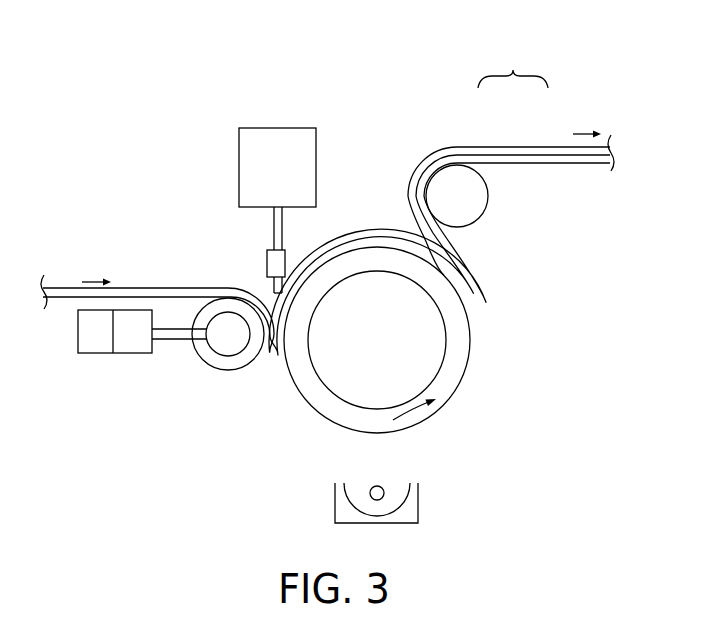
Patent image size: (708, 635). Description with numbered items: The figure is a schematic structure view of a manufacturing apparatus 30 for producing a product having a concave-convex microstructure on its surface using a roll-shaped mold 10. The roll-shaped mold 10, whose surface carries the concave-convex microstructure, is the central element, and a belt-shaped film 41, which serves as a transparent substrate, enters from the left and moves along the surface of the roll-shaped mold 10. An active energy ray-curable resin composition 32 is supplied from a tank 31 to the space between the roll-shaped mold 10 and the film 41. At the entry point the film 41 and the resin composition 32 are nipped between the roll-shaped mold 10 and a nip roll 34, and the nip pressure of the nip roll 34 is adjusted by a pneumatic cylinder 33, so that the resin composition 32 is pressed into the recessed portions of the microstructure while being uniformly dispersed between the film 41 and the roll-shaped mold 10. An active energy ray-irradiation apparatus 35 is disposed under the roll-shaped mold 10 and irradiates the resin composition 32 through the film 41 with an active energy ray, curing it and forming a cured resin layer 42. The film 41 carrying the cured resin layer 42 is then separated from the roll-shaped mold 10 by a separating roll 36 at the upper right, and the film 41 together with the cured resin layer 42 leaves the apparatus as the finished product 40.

The manufacturing apparatus 30 is at (141, 100).
The roll-shaped mold 10 is at (375, 244).
The tank 31 is at (239, 163).
The active energy ray-curable resin composition 32 is at (272, 293).
The pneumatic cylinder 33 is at (128, 354).
The nip roll 34 is at (228, 371).
The active energy ray-irradiation apparatus 35 is at (418, 500).
The separating roll 36 is at (489, 196).
The product 40 is at (513, 67).
The film 41 is at (163, 287).
The cured resin layer 42 is at (496, 150).